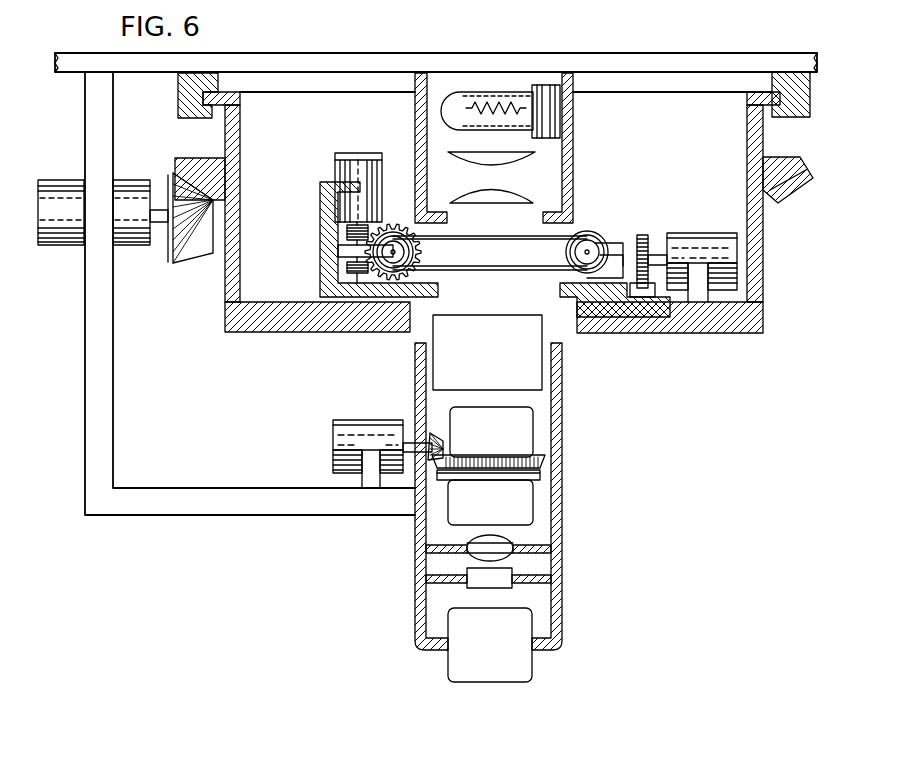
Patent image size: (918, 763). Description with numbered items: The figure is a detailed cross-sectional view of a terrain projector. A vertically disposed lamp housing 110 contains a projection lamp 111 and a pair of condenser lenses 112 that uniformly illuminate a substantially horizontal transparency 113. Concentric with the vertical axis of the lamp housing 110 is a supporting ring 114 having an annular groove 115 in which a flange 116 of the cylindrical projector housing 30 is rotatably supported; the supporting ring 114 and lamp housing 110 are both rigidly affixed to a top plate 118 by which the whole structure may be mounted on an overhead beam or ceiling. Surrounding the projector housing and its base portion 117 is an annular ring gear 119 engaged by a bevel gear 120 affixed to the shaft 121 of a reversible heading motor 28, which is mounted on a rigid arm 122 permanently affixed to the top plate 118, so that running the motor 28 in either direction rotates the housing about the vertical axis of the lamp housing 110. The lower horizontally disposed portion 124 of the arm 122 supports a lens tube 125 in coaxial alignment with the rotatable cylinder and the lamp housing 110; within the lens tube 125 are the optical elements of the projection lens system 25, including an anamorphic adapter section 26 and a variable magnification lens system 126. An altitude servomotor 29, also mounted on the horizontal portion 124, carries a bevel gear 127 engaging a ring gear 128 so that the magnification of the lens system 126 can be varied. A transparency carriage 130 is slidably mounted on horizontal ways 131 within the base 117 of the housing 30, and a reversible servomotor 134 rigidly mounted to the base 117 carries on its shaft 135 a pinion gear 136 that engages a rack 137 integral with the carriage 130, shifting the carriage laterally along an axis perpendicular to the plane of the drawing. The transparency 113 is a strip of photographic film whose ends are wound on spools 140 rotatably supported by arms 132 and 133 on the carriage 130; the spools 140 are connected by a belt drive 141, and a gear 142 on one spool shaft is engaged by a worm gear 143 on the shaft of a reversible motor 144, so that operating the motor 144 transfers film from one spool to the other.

The projection lens system 25 is at (484, 512).
The anamorphic adapter section 26 is at (502, 586).
The reversible heading motor 28 is at (78, 245).
The altitude servomotor 29 is at (336, 461).
The cylindrical projector housing 30 is at (757, 223).
The lamp housing 110 is at (566, 153).
The projection lamp 111 is at (470, 79).
The condenser lenses 112 is at (505, 167).
The transparency 113 is at (546, 278).
The supporting ring 114 is at (664, 85).
The annular groove 115 is at (772, 84).
The flange 116 is at (238, 87).
The base portion of projector housing 117 is at (708, 327).
The top plate 118 is at (736, 62).
The annular ring gear 119 is at (802, 187).
The bevel gear 120 is at (189, 254).
The shaft 121 is at (154, 245).
The rigid arm 122 is at (101, 473).
The lower horizontally disposed portion 124 is at (265, 508).
The lens tube 125 is at (418, 539).
The variable magnification lens system 126 is at (522, 437).
The bevel gear 127 is at (431, 432).
The ring gear 128 is at (480, 433).
The transparency carriage 130 is at (318, 232).
The horizontal ways 131 is at (372, 328).
The arm 132 is at (626, 226).
The arm 133 is at (485, 198).
The reversible servomotor 134 is at (712, 233).
The rotatable shaft 135 is at (655, 250).
The pinion gear 136 is at (637, 238).
The rack 137 is at (549, 370).
The spools 140 is at (420, 250).
The belt drive 141 is at (484, 236).
The gear 142 is at (413, 245).
The worm gear 143 is at (345, 269).
The reversible motor 144 is at (373, 155).